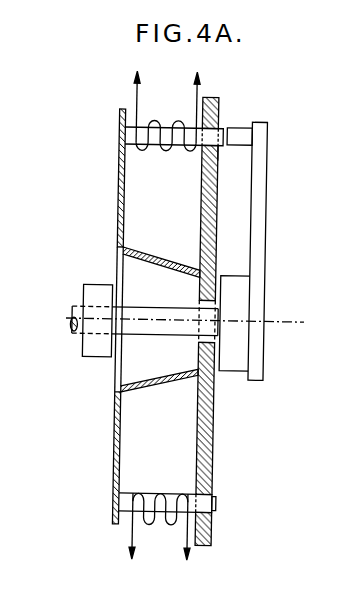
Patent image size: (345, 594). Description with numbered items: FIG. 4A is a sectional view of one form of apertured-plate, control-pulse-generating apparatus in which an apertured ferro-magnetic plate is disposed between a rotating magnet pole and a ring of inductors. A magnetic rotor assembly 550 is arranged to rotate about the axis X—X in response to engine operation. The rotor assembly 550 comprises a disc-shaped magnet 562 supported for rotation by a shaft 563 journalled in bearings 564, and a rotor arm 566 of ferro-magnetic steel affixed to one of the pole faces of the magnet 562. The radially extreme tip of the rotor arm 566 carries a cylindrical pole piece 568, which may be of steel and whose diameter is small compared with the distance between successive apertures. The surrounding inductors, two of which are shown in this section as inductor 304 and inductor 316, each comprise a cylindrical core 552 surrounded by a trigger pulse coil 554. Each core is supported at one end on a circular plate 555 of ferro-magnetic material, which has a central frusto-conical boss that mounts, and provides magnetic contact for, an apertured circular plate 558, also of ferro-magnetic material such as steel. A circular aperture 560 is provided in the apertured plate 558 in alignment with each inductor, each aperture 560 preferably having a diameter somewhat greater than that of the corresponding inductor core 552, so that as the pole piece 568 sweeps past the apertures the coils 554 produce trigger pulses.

The magnetic rotor assembly 550 is at (318, 218).
The cylindrical core 552 is at (164, 130).
The trigger pulse coil 554 is at (179, 147).
The inductor 304 is at (217, 129).
The cylindrical pole piece 568 is at (234, 127).
The circular aperture 560 is at (215, 149).
The rotor arm 566 is at (265, 177).
The disc-shaped magnet 562 is at (243, 371).
The bearings 564 is at (92, 287).
The shaft 563 is at (147, 308).
The circular plate 555 is at (114, 439).
The apertured circular plate 558 is at (272, 437).
The inductor 316 is at (219, 506).